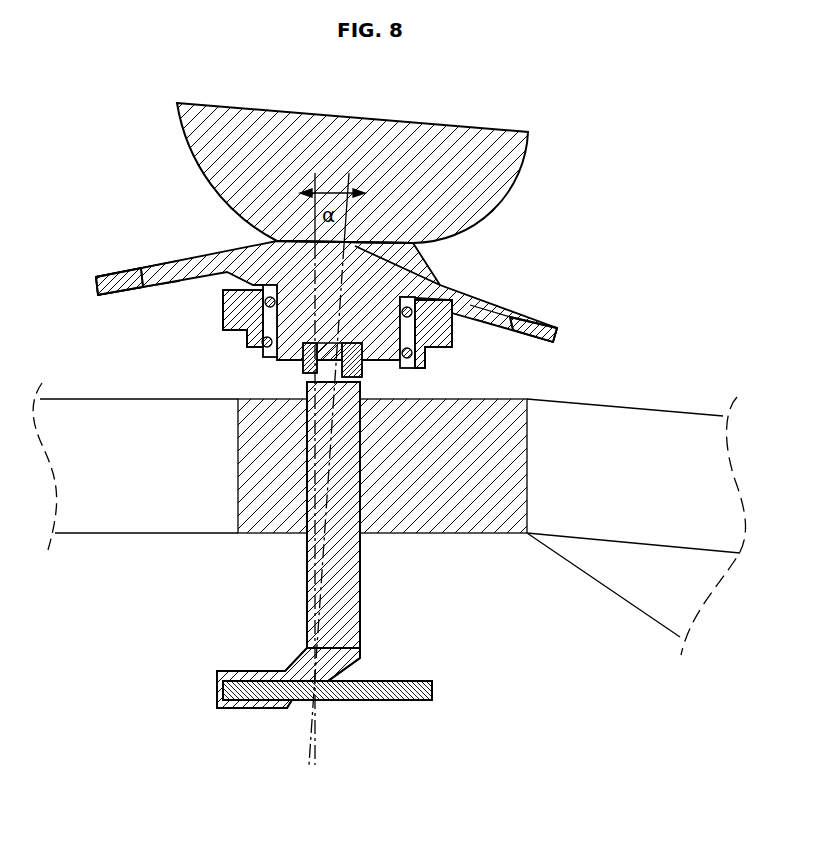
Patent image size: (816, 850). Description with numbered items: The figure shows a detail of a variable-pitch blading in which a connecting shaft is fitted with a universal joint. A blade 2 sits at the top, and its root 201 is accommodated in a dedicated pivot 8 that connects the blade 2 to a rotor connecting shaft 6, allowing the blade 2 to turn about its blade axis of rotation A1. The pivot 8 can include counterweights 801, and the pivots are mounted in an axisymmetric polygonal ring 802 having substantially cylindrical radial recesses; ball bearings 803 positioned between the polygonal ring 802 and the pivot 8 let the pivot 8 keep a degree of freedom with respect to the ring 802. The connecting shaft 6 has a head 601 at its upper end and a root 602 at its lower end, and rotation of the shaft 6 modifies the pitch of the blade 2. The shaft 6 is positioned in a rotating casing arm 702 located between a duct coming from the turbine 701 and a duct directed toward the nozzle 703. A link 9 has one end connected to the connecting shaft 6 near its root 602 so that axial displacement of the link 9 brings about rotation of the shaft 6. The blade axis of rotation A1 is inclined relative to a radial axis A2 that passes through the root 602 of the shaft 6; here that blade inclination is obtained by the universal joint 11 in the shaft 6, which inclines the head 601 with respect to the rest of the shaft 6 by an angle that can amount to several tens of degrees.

The blade 2 is at (447, 190).
The root 201 is at (360, 248).
The pivot 8 is at (252, 252).
The counterweights 801 is at (128, 283).
The axisymmetric ring 802 is at (450, 328).
The ball bearings 803 is at (255, 343).
The head 601 is at (438, 327).
The universal joint 11 is at (372, 382).
The rotor connecting shaft 6 is at (336, 555).
The root 602 is at (337, 643).
The link 9 is at (253, 688).
The duct coming from the turbine 701 is at (137, 487).
The rotating casing arm 702 is at (443, 492).
The duct directed toward the nozzle 703 is at (620, 440).
The blade axis of rotation A1 is at (357, 183).
The radial axis A2 is at (307, 185).